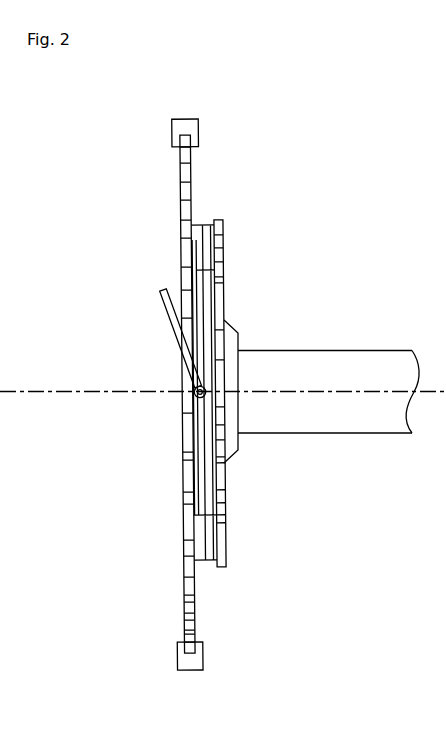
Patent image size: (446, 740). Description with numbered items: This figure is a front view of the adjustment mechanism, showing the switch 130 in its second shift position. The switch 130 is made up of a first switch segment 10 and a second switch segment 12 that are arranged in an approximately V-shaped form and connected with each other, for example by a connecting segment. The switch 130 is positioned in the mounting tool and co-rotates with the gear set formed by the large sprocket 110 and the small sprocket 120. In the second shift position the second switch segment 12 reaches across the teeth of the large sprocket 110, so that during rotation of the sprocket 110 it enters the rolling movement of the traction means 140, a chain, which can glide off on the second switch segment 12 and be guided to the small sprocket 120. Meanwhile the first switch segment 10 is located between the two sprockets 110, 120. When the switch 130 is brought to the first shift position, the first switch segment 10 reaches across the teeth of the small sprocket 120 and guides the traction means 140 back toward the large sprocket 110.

The first switch segment 10 is at (223, 278).
The second switch segment 12 is at (172, 324).
The sprocket 110 is at (190, 161).
The sprocket 120 is at (216, 226).
The switch 130 is at (160, 288).
The traction means 140 is at (190, 661).